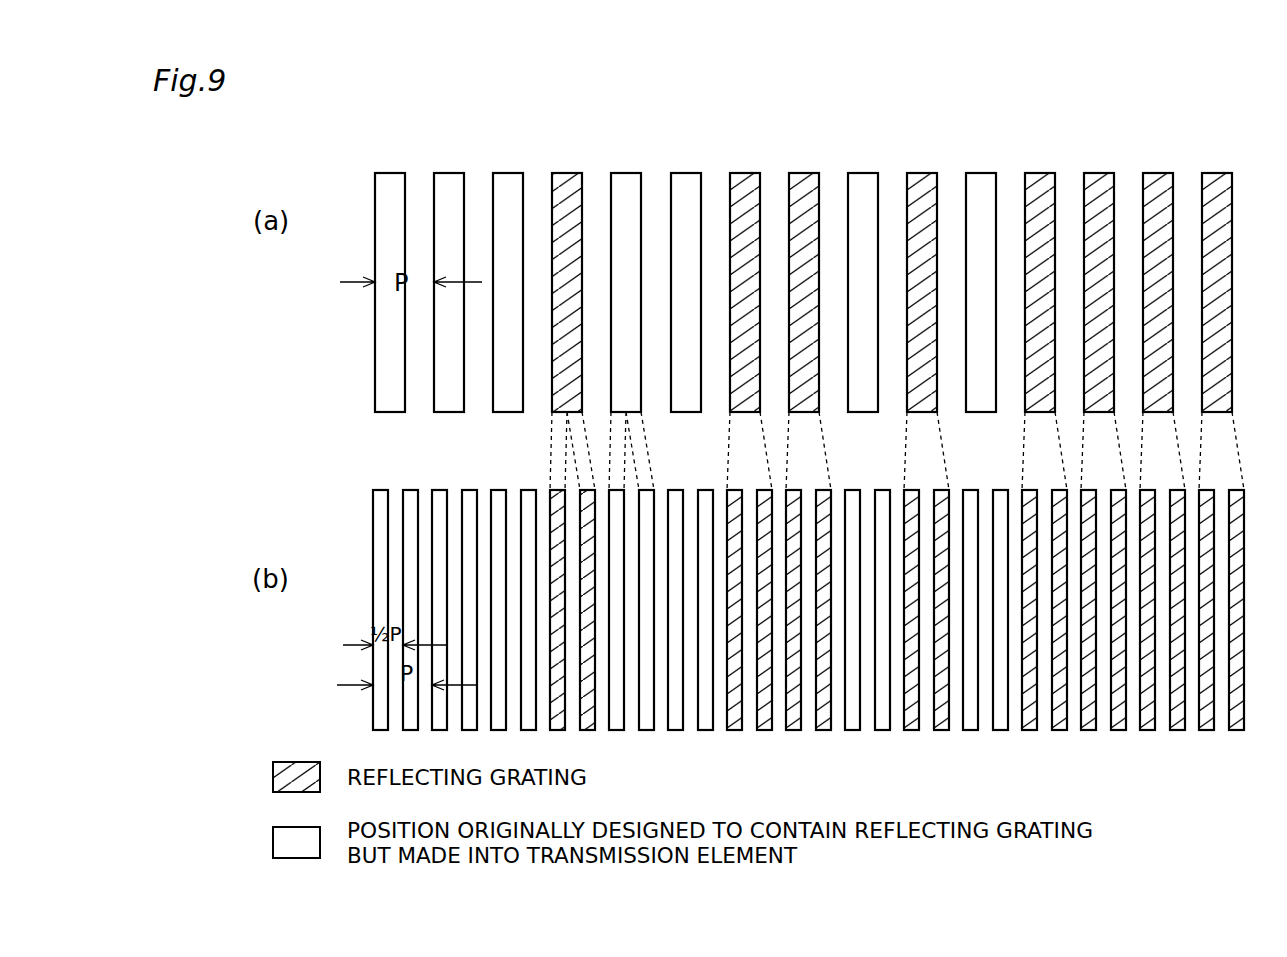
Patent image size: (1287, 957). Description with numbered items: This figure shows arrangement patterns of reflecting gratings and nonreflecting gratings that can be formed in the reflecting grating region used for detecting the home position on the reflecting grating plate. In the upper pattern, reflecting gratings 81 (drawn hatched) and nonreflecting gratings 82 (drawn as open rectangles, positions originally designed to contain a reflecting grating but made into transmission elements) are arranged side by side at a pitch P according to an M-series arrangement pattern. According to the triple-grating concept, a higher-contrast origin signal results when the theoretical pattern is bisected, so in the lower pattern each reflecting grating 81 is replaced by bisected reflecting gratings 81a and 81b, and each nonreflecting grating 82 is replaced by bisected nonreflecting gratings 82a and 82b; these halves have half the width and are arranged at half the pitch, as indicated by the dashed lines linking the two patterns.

The reflecting grating 81 is at (577, 178).
The nonreflecting grating 82 is at (637, 182).
The bisected reflecting grating 81a is at (552, 500).
The bisected reflecting grating 81b is at (577, 497).
The bisected nonreflecting grating 82a is at (620, 500).
The bisected nonreflecting grating 82b is at (650, 500).